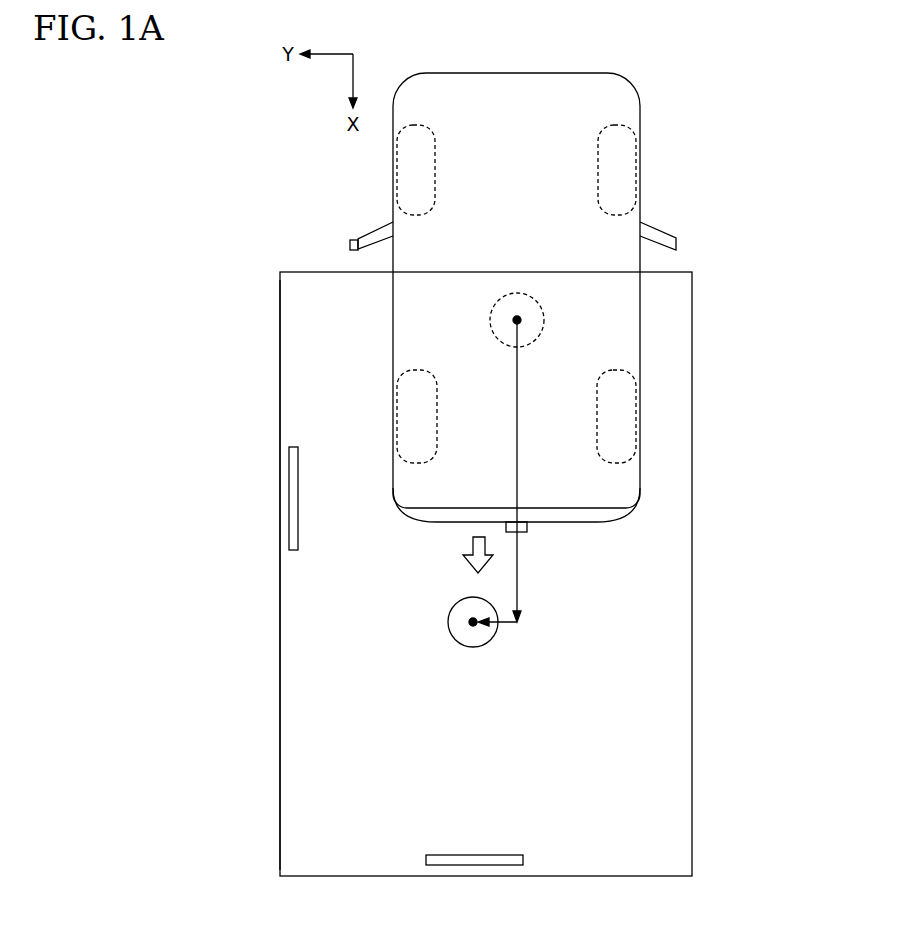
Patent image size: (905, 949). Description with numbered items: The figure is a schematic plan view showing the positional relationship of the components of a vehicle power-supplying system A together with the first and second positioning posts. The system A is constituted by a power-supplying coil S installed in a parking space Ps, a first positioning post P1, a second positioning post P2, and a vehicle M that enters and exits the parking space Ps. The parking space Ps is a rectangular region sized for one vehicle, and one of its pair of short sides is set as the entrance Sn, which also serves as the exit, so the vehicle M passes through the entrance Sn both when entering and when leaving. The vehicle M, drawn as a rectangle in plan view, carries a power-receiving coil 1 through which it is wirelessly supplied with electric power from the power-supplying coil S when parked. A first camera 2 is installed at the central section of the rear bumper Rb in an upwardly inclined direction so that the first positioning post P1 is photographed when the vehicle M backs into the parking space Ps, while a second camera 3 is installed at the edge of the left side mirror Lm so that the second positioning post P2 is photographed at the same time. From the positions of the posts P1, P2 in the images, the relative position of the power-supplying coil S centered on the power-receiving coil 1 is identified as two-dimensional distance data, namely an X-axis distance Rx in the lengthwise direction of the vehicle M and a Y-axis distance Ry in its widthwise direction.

The vehicle power-supplying system A is at (746, 102).
The power-receiving coil 1 is at (547, 318).
The first camera 2 is at (527, 527).
The second camera 3 is at (349, 245).
The left side mirror Lm is at (372, 228).
The vehicle M is at (641, 212).
The rear bumper Rb is at (446, 523).
The entrance Sn is at (293, 271).
The parking space Ps is at (279, 343).
The first positioning post P1 is at (490, 855).
The second positioning post P2 is at (298, 533).
The power-supplying coil S is at (448, 622).
The X-axis distance Rx is at (518, 580).
The Y-axis distance Ry is at (500, 624).